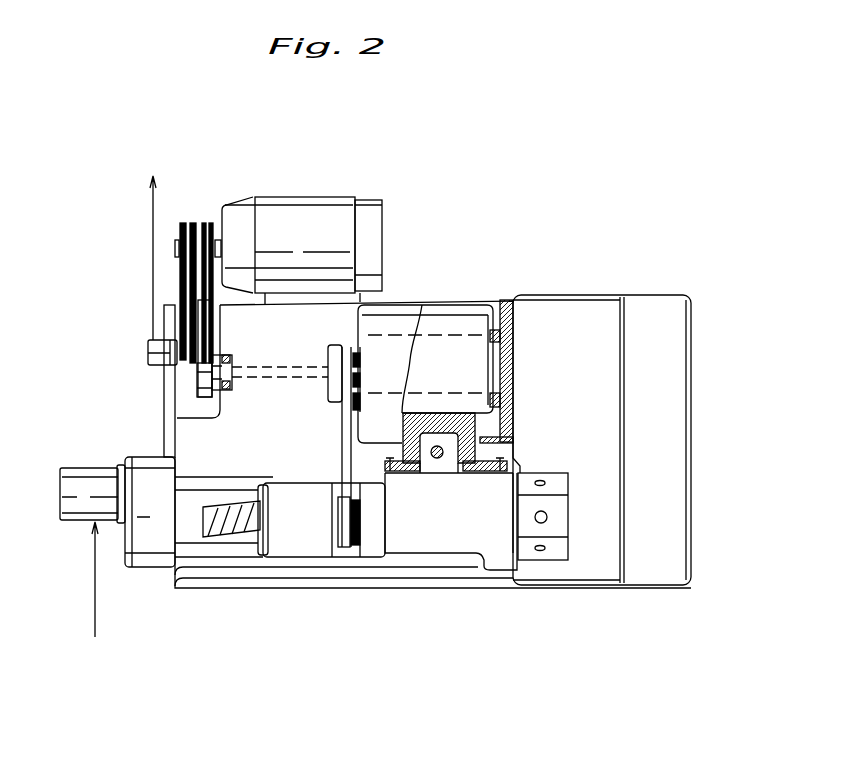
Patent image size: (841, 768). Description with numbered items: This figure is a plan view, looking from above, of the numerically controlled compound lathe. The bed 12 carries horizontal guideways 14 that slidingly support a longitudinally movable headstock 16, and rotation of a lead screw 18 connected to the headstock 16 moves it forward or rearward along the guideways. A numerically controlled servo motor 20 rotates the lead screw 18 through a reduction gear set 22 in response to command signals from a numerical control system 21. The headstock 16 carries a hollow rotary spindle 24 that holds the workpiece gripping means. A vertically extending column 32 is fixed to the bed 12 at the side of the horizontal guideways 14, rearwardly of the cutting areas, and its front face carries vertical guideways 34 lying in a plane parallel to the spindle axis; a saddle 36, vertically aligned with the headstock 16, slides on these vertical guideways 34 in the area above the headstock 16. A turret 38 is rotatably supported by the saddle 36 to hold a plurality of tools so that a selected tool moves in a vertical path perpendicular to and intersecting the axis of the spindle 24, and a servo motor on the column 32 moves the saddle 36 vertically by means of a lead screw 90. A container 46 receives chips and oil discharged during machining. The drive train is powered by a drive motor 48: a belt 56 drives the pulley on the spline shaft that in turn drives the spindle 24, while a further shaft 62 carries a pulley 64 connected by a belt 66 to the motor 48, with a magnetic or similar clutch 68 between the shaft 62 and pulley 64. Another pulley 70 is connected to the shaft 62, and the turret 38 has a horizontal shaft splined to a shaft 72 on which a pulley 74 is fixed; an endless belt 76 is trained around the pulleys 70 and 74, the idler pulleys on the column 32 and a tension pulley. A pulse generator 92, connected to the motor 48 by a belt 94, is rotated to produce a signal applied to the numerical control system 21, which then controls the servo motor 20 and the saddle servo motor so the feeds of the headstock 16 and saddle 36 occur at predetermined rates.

The bed 12 is at (218, 582).
The horizontal guideways 14 is at (258, 560).
The headstock 16 is at (310, 492).
The lead screw 18 is at (215, 520).
The servo motor 20 is at (91, 468).
The numerical control system 21 is at (163, 407).
The reduction gear set 22 is at (146, 567).
The spindle 24 is at (252, 485).
The column 32 is at (400, 307).
The vertical guideways 34 is at (480, 475).
The saddle 36 is at (440, 553).
The turret 38 is at (564, 533).
The container 46 is at (566, 583).
The drive motor 48 is at (238, 206).
The belt 56 is at (190, 406).
The shaft 62 is at (284, 378).
The pulley 64 is at (214, 366).
The belt 66 is at (213, 323).
The clutch 68 is at (222, 388).
The pulley 70 is at (330, 354).
The shaft 72 is at (362, 526).
The pulley 74 is at (345, 522).
The belt 76 is at (342, 436).
The lead screw 90 is at (437, 446).
The pulse generator 92 is at (148, 352).
The belt 94 is at (183, 285).